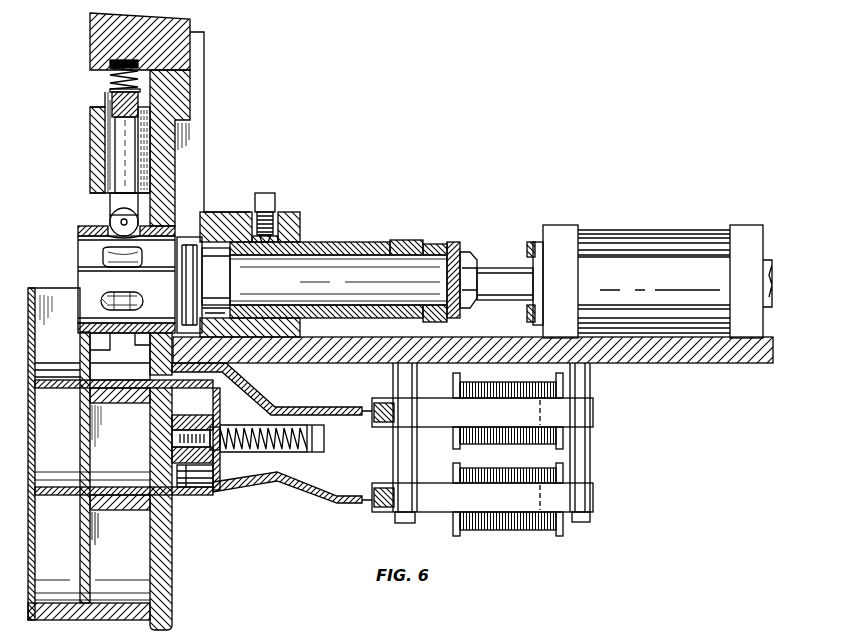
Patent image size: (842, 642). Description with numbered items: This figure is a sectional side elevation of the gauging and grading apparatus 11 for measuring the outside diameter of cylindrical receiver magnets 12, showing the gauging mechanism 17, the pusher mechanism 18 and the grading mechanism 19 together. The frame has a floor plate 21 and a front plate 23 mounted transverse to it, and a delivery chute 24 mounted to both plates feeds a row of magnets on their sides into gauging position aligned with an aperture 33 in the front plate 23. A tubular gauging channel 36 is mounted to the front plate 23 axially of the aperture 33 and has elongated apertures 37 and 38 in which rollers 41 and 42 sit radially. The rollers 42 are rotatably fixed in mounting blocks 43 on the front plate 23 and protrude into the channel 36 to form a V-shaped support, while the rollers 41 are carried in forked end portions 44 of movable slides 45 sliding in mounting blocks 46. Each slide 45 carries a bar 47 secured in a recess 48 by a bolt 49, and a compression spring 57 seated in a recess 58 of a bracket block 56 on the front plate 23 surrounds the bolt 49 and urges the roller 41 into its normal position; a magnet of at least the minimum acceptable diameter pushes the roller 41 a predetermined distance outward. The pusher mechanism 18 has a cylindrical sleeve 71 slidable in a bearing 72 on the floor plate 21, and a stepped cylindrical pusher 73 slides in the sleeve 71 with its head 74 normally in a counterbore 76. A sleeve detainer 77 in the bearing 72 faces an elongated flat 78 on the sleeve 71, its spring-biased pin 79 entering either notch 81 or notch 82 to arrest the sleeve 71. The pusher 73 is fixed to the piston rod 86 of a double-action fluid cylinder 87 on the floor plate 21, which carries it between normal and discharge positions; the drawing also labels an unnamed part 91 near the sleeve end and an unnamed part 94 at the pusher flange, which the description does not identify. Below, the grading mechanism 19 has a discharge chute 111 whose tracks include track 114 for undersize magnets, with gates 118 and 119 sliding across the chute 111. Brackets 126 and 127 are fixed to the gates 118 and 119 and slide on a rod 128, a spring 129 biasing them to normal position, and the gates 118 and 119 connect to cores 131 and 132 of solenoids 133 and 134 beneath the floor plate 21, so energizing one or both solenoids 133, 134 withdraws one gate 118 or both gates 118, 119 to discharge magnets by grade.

The gauging and grading apparatus 11 is at (543, 62).
The receiver magnet 12 is at (188, 237).
The gauging mechanism 17 is at (69, 202).
The pusher mechanism 18 is at (547, 199).
The grading mechanism 19 is at (609, 396).
The floor plate 21 is at (690, 363).
The front plate 23 is at (172, 563).
The delivery chute 24 is at (210, 36).
The aperture 33 is at (173, 148).
The tubular gauging channel 36 is at (78, 232).
The elongated aperture 37 is at (78, 250).
The elongated aperture 38 is at (103, 298).
The roller 41 is at (110, 224).
The roller 42 is at (121, 289).
The mounting block 43 is at (98, 358).
The forked end portion 44 is at (110, 205).
The movable slide 45 is at (108, 155).
The mounting block 46 is at (90, 130).
The bar 47 is at (111, 100).
The recess 48 is at (119, 120).
The bolt 49 is at (110, 90).
The bracket block 56 is at (90, 28).
The compression spring 57 is at (110, 78).
The recess 58 is at (121, 62).
The cylindrical sleeve 71 is at (325, 242).
The bearing 72 is at (292, 212).
The stepped cylindrical pusher 73 is at (452, 242).
The head 74 is at (230, 278).
The counterbore 76 is at (215, 318).
The sleeve detainer 77 is at (246, 211).
The elongated flat 78 is at (340, 257).
The pin 79 is at (264, 245).
The notch 81 is at (272, 245).
The notch 82 is at (403, 240).
The piston rod 86 is at (498, 268).
The double-action fluid cylinder 87 is at (645, 235).
The spacer 91 is at (430, 246).
The nut 94 is at (466, 250).
The discharge chute 111 is at (47, 269).
The track 114 is at (82, 614).
The gate 118 is at (72, 388).
The gate 119 is at (72, 487).
The bracket 126 is at (214, 418).
The bracket 127 is at (213, 477).
The rod 128 is at (325, 438).
The spring 129 is at (298, 450).
The core 131 is at (545, 412).
The core 132 is at (545, 498).
The solenoid 133 is at (515, 384).
The solenoid 134 is at (522, 470).